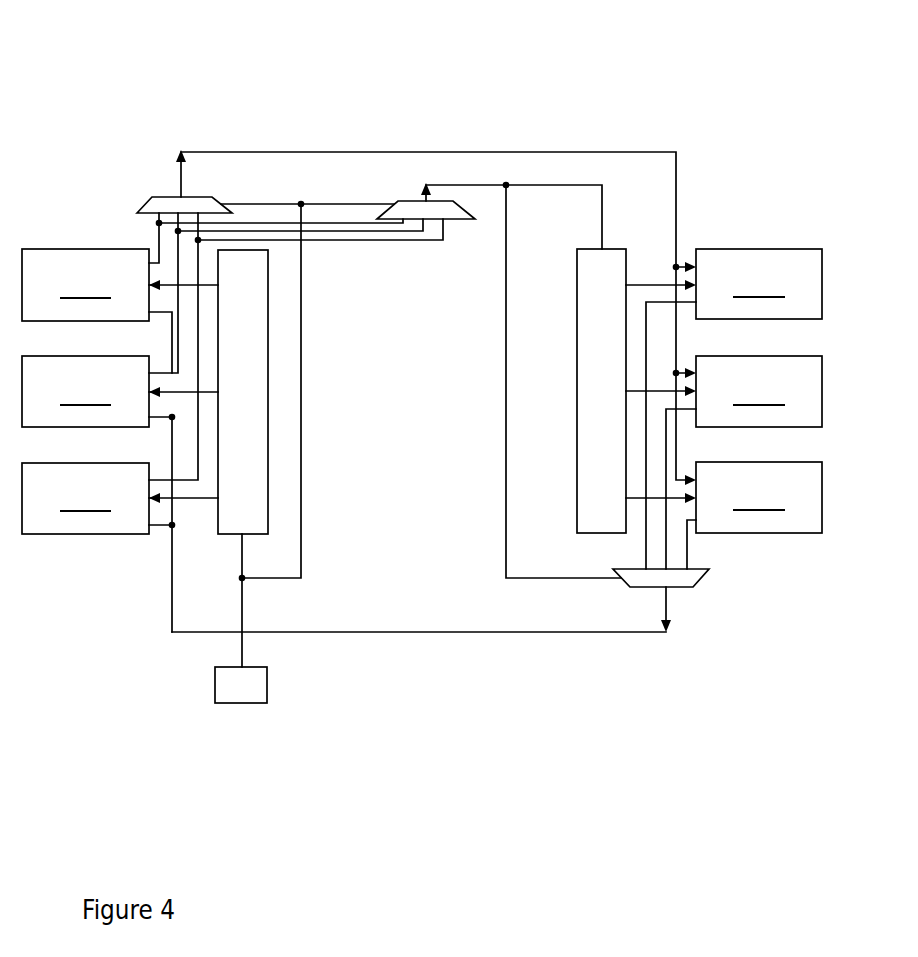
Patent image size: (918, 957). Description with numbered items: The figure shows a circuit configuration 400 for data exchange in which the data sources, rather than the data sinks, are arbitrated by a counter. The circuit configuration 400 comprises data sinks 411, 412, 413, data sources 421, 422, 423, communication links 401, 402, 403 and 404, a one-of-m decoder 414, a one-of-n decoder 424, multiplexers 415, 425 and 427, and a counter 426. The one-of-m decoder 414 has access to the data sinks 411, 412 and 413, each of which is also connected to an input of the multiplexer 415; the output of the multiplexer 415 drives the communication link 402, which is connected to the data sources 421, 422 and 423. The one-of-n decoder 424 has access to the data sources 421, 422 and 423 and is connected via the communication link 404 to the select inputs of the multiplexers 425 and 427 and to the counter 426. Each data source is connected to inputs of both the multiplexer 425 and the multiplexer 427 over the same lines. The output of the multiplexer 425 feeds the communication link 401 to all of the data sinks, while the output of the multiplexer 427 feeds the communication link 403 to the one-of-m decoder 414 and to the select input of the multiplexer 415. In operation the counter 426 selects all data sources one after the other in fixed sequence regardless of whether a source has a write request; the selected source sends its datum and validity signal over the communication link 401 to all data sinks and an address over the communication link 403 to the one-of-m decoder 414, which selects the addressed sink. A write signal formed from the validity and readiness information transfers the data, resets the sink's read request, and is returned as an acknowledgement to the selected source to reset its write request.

The circuit configuration 400 is at (420, 113).
The communication link 401 is at (641, 148).
The communication link 402 is at (565, 635).
The communication link 403 is at (502, 533).
The communication link 404 is at (305, 438).
The data sink 411 is at (759, 284).
The data sink 412 is at (759, 391).
The data sink 413 is at (759, 497).
The 1-of-m decoder 414 is at (575, 493).
The multiplexer 415 is at (705, 573).
The data source 421 is at (85, 285).
The data source 422 is at (85, 391).
The data source 423 is at (85, 498).
The 1-of-n decoder 424 is at (273, 513).
The multiplexer 425 is at (145, 200).
The counter 426 is at (267, 678).
The multiplexer 427 is at (466, 223).